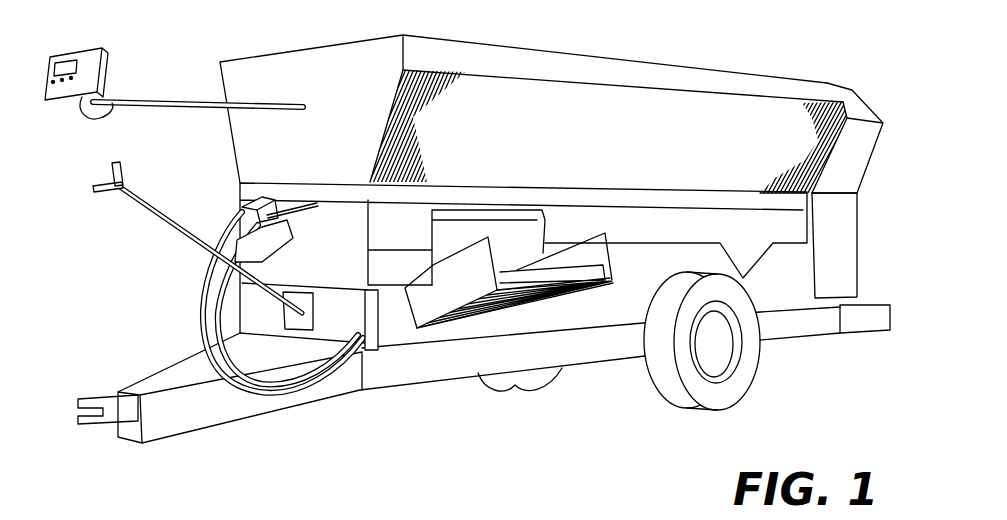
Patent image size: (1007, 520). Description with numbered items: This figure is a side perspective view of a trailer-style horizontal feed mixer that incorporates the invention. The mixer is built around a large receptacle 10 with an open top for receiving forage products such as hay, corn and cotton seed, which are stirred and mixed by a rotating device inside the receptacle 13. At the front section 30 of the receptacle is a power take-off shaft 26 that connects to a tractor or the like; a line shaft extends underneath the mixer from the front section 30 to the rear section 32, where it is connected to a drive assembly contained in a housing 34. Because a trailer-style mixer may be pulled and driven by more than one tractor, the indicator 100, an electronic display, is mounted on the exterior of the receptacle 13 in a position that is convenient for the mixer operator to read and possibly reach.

The receptacle 10 is at (826, 354).
The receptacle 13 is at (772, 122).
The power take-off shaft 26 is at (183, 238).
The front section 30 is at (390, 53).
The rear section 32 is at (778, 75).
The housing 34 is at (840, 235).
The indicator 100 is at (110, 62).